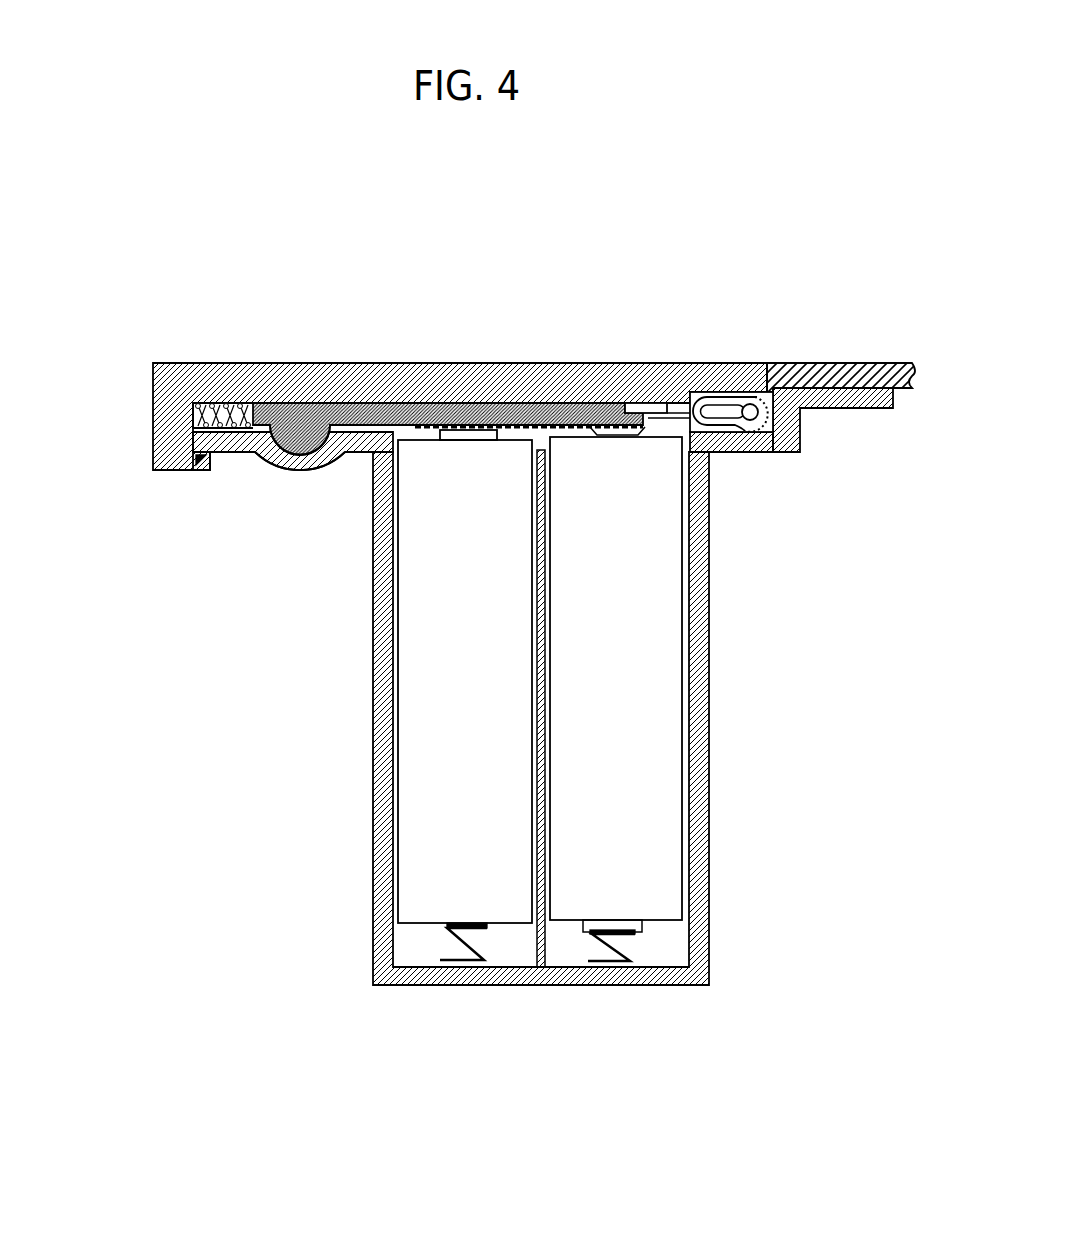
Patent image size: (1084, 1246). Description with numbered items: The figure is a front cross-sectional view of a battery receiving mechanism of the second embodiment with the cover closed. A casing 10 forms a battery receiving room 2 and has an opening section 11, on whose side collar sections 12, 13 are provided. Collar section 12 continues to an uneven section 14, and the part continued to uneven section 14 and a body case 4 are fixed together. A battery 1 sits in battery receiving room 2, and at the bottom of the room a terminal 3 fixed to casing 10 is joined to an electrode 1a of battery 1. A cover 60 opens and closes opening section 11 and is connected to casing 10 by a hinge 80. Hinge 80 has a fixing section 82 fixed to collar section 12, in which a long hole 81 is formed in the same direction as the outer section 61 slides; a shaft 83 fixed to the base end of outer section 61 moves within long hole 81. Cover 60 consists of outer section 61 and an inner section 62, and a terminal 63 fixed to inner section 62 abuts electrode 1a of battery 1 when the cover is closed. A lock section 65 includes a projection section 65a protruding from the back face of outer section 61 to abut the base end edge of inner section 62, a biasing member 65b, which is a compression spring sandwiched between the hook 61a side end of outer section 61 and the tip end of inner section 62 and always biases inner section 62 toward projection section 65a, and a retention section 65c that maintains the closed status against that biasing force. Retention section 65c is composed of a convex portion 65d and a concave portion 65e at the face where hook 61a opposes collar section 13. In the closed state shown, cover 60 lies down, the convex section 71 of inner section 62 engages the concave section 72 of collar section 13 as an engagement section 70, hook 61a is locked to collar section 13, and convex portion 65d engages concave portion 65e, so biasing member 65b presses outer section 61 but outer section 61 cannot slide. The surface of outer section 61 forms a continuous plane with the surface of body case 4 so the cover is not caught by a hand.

The battery 1 is at (418, 758).
The electrode 1a is at (477, 433).
The battery receiving room 2 is at (515, 950).
The terminal 3 is at (462, 948).
The body case 4 is at (882, 363).
The casing 10 is at (702, 623).
The opening section 11 is at (423, 430).
The collar section 12 is at (755, 445).
The collar section 13 is at (358, 455).
The uneven section 14 is at (800, 425).
The cover 60 is at (417, 339).
The outer section 61 is at (243, 378).
The inner section 62 is at (323, 403).
The terminal 63 is at (521, 352).
The lock section 65 is at (374, 414).
The projection section 65a is at (677, 412).
The biasing member 65b is at (187, 405).
The retention section 65c is at (171, 531).
The convex portion 65d is at (201, 457).
The concave portion 65e is at (197, 458).
The hook 61a is at (203, 468).
The engagement section 70 is at (291, 524).
The convex section 71 is at (303, 448).
The concave section 72 is at (283, 452).
The hinge 80 is at (766, 319).
The long hole 81 is at (715, 410).
The fixing section 82 is at (742, 400).
The shaft 83 is at (792, 344).